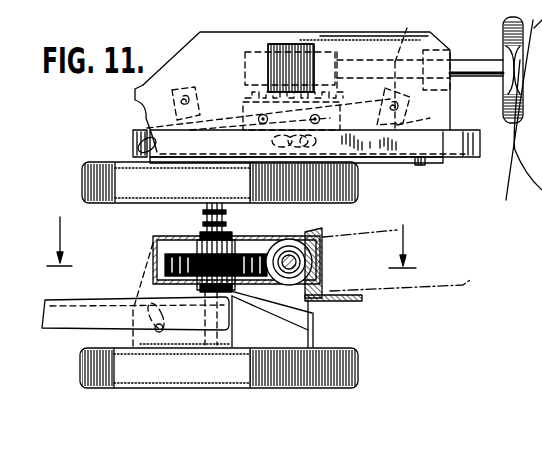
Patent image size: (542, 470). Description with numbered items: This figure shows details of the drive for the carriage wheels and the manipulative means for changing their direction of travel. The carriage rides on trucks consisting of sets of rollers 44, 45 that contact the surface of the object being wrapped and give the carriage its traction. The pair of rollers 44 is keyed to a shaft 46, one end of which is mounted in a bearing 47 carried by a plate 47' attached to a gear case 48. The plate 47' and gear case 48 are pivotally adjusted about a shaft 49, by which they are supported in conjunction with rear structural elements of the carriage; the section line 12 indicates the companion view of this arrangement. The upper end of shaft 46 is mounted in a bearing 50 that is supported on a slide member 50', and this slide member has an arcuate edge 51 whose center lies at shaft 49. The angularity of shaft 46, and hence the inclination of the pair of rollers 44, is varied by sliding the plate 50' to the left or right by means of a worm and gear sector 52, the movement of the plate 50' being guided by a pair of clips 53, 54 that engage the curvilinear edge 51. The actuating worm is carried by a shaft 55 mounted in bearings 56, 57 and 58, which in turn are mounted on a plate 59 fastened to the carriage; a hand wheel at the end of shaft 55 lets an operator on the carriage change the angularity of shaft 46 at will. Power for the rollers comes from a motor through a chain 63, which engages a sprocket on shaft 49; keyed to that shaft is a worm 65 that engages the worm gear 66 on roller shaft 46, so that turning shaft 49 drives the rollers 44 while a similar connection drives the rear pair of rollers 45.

The section line 12 is at (232, 252).
The rollers 44 is at (362, 185).
The rollers 45 is at (406, 4).
The shaft 46 is at (206, 211).
The bearing 47 is at (259, 315).
The plate 47' is at (135, 301).
The gear case 48 is at (152, 242).
The shaft 49 is at (319, 265).
The bearing 50 is at (315, 181).
The slide member 50' is at (439, 179).
The arcuate edge 51 is at (432, 118).
The worm and gear sector 52 is at (297, 63).
The clip 53 is at (197, 96).
The clip 54 is at (420, 107).
The shaft 55 is at (407, 29).
The bearing 56 is at (257, 47).
The bearing 57 is at (338, 50).
The bearing 58 is at (445, 47).
The plate 59 is at (140, 86).
The chain 63 is at (415, 292).
The worm 65 is at (320, 244).
The worm gear 66 is at (201, 289).